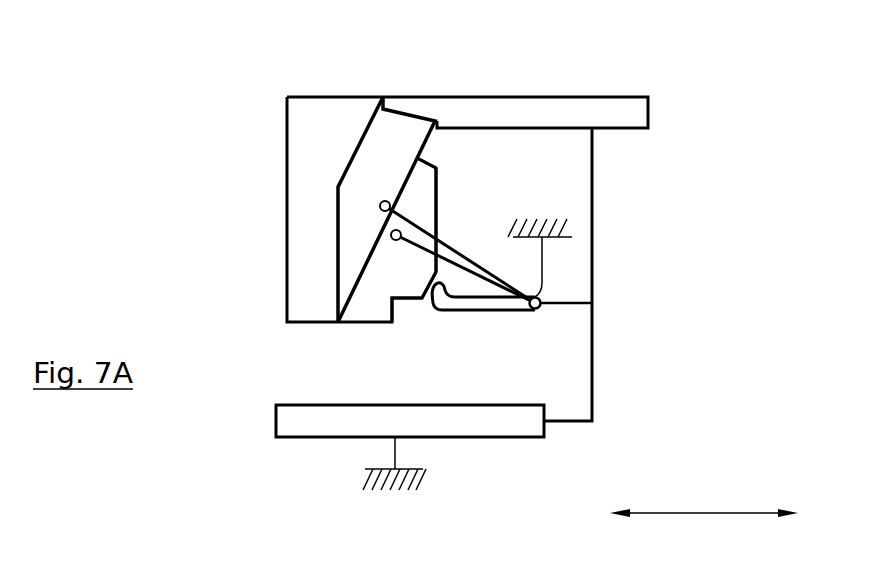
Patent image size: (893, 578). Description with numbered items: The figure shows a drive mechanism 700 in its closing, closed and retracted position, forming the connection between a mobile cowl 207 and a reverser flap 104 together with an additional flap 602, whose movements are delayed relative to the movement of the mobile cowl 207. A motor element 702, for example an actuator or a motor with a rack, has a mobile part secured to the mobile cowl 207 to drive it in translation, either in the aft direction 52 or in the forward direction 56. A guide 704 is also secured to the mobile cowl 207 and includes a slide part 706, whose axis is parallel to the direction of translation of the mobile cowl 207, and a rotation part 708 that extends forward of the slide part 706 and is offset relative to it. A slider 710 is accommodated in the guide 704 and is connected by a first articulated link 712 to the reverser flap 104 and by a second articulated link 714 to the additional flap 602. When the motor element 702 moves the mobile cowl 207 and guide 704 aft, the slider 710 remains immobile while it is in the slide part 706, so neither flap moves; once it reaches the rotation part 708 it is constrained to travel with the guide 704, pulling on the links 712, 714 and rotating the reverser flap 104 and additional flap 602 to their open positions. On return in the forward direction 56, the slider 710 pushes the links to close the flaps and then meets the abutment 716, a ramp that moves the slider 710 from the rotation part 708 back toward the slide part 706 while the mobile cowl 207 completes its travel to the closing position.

The drive mechanism 700 is at (745, 90).
The mobile cowl 207 is at (532, 112).
The reverser flap 104 is at (382, 162).
The additional flap 602 is at (440, 167).
The first articulated link 712 is at (381, 203).
The second articulated link 714 is at (420, 248).
The abutment 716 is at (542, 290).
The slide part 706 is at (508, 308).
The slider 710 is at (541, 305).
The rotation part 708 is at (437, 300).
The motor element 702 is at (310, 419).
The guide 704 is at (630, 376).
The forward direction 56 is at (692, 537).
The aft direction 52 is at (793, 539).